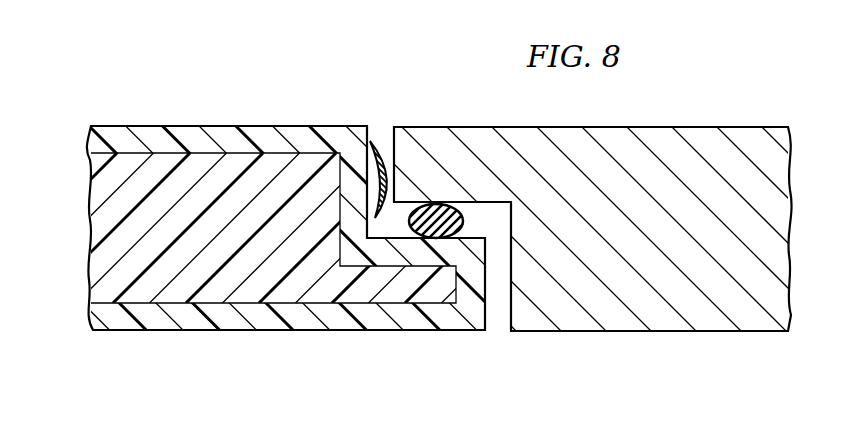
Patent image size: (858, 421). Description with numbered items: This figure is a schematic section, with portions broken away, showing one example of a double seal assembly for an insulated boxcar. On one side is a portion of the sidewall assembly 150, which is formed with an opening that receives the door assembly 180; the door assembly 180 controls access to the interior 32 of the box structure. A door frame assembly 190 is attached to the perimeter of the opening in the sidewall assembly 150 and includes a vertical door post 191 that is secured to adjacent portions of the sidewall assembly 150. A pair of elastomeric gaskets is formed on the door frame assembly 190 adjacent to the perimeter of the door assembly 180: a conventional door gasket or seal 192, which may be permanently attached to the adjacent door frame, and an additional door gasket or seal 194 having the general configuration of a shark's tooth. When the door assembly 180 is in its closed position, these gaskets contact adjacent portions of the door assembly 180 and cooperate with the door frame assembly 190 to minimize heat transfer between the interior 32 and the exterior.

The sidewall assembly 150 is at (210, 103).
The door assembly 180 is at (703, 127).
The interior 32 is at (686, 368).
The door frame assembly 190 is at (493, 327).
The vertical door post 191 is at (403, 237).
The door gasket or seal 192 is at (467, 218).
The door gasket or seal 194 is at (379, 141).